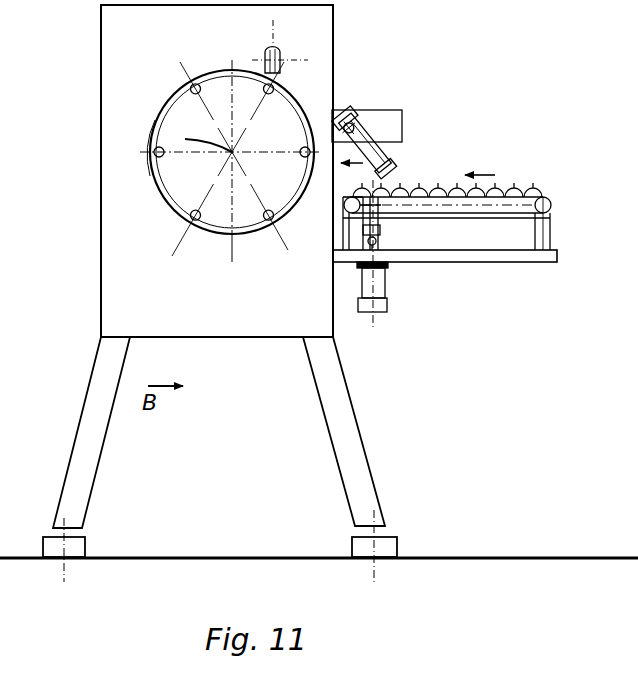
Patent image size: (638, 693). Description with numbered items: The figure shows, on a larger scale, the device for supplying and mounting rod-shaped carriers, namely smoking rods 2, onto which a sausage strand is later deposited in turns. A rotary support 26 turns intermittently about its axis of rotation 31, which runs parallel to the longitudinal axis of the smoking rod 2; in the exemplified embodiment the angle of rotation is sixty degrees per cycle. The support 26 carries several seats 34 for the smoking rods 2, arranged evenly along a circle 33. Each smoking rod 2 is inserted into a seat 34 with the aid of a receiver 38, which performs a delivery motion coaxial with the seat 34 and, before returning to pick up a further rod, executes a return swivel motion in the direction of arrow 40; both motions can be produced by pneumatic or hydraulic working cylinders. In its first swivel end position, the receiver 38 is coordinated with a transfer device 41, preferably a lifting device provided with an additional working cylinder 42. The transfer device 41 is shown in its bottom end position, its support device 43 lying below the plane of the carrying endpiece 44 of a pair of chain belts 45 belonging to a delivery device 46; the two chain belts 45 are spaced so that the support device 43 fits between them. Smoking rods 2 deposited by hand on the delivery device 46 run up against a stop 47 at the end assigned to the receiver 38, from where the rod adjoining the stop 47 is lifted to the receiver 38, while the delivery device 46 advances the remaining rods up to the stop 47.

The smoking rod 2 is at (270, 86).
The support 26 is at (160, 203).
The axis of rotation 31 is at (153, 138).
The circle 33 is at (160, 175).
The seat 34 is at (193, 85).
The receiver 38 is at (388, 151).
The arrow 40 is at (418, 163).
The transfer device 41 is at (388, 228).
The working cylinder 42 is at (388, 306).
The support device 43 is at (357, 225).
The carrying endpiece 44 is at (465, 203).
The chain belt 45 is at (510, 213).
The delivery device 46 is at (512, 187).
The stop 47 is at (352, 212).